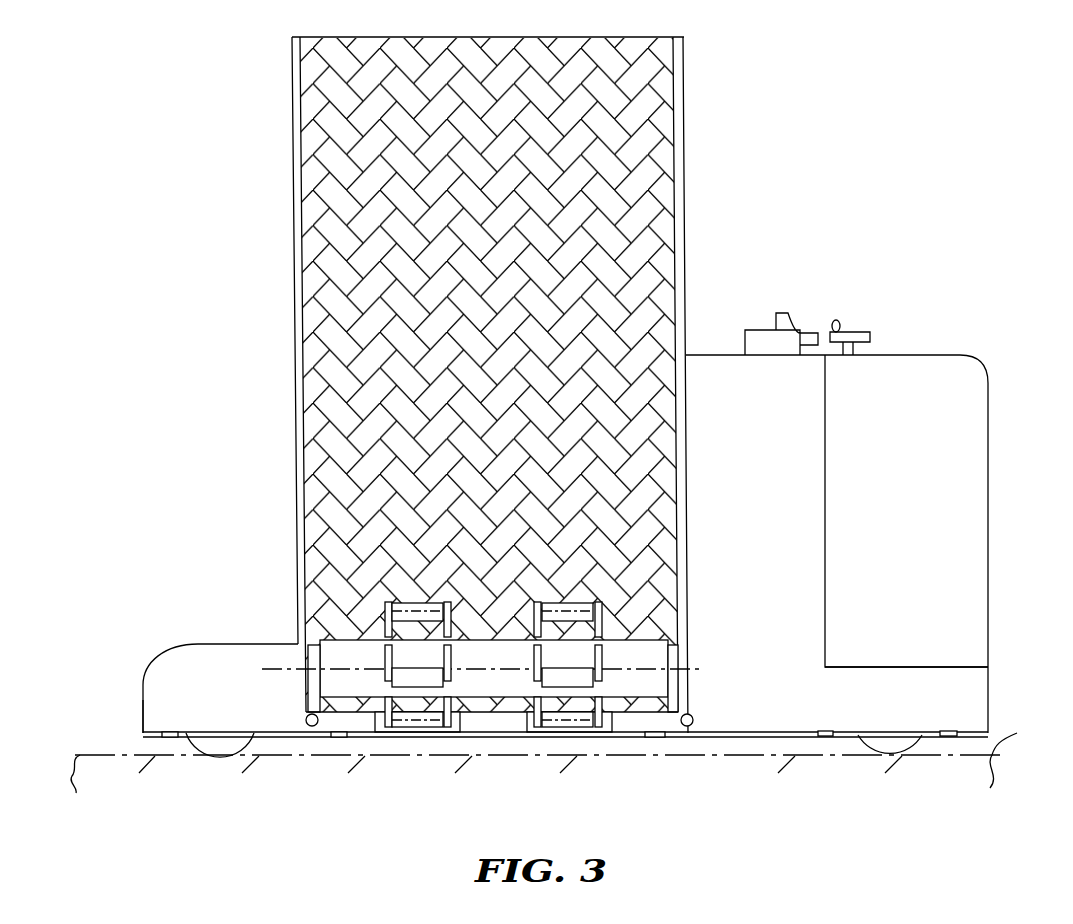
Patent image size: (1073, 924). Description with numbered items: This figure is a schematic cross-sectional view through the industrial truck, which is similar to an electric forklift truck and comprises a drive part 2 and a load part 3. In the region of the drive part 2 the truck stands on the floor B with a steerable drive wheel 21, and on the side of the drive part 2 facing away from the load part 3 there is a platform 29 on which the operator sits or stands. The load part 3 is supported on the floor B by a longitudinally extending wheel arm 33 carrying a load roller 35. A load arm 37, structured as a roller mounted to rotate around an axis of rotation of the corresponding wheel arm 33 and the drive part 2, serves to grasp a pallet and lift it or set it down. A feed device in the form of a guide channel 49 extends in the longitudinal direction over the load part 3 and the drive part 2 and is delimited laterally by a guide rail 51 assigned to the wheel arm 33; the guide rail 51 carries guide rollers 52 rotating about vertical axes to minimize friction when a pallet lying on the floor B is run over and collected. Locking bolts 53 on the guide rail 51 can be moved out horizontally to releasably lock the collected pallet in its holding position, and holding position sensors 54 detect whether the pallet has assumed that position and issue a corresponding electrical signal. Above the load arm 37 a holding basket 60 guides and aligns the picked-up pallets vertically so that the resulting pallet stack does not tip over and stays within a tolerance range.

The drive part 2 is at (983, 373).
The load part 3 is at (163, 658).
The steerable drive wheel 21 is at (893, 740).
The platform 29 is at (983, 612).
The wheel arm 33 is at (158, 709).
The load roller 35 is at (219, 742).
The load arm 37 is at (500, 690).
The guide channel 49 is at (932, 676).
The guide rail 51 is at (143, 736).
The guide roller 52 is at (171, 740).
The locking bolt 53 is at (312, 727).
The holding position sensor 54 is at (320, 738).
The holding basket 60 is at (683, 183).
The floor B is at (556, 750).